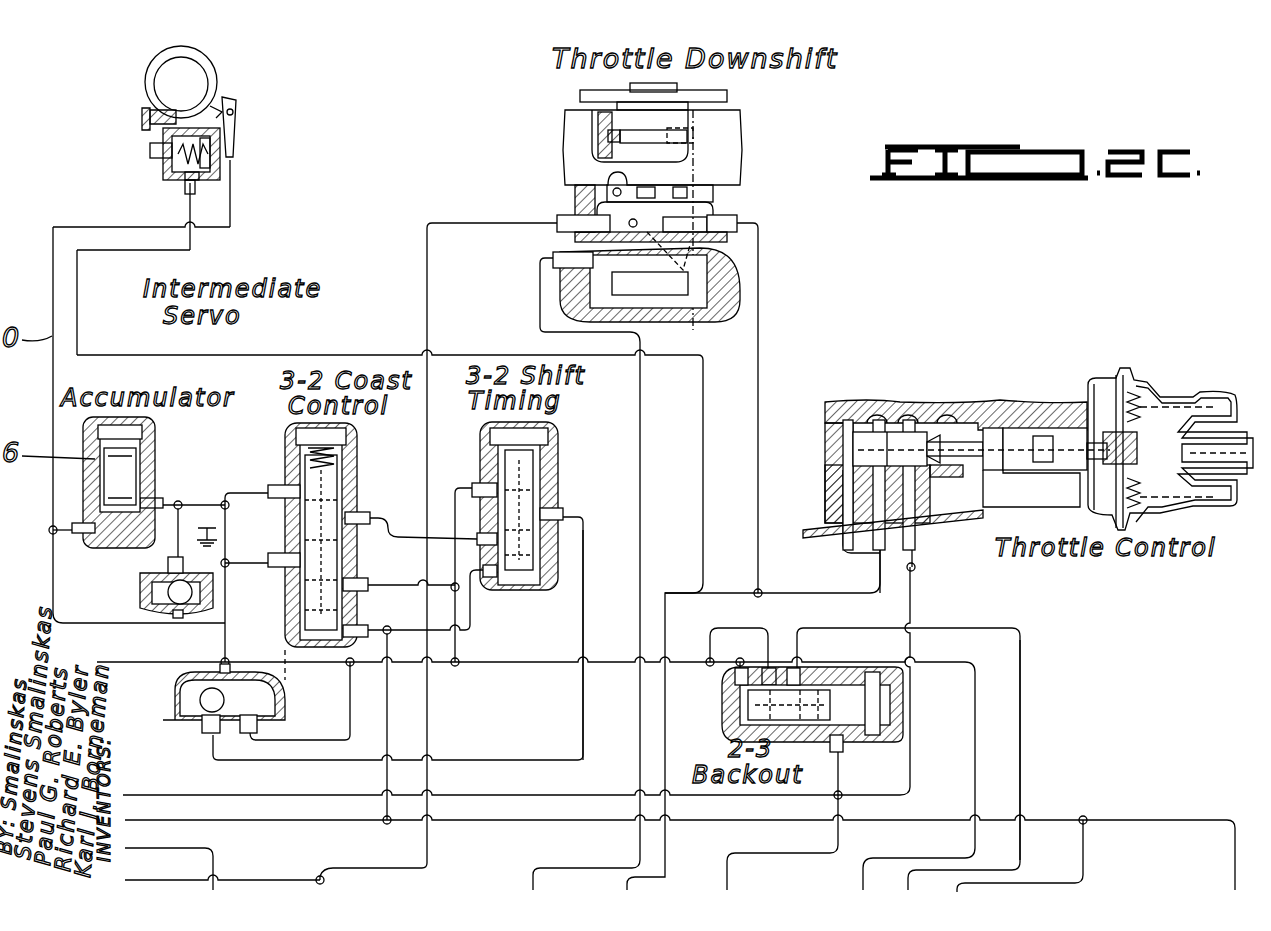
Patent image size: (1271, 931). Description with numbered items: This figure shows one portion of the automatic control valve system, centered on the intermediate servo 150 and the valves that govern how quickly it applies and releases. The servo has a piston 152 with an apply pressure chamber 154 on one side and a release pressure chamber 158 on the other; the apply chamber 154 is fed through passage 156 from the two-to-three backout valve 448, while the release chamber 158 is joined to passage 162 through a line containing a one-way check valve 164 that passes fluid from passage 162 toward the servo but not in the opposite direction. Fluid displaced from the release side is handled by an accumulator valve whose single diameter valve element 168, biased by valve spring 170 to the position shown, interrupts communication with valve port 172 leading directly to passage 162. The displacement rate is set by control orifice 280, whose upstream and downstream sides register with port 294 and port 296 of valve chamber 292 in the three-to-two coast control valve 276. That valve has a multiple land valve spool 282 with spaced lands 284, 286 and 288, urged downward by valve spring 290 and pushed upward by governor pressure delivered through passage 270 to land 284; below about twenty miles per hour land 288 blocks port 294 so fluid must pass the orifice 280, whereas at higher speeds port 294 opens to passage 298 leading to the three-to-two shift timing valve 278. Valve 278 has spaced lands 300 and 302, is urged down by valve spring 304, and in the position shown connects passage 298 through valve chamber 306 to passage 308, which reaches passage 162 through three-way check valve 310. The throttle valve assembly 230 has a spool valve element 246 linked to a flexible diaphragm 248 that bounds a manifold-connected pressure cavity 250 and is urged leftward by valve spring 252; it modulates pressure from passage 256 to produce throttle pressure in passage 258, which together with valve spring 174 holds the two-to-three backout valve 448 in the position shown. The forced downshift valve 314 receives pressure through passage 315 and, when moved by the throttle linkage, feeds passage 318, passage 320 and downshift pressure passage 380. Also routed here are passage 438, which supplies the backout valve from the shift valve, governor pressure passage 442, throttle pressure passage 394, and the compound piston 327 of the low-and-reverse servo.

The intermediate servo 150 is at (302, 42).
The piston 152 is at (150, 149).
The apply pressure chamber 154 is at (170, 176).
The release pressure chamber 158 is at (225, 164).
The passage 156 is at (312, 345).
The forced downshift valve 314 is at (706, 165).
The passage 315 is at (760, 290).
The passage 318 is at (508, 207).
The passage 320 is at (540, 290).
The valve spring 170 is at (160, 450).
The single diameter valve element 168 is at (148, 471).
The valve port 172 is at (150, 501).
The one-way check valve 164 is at (166, 590).
The passage 162 is at (123, 662).
The control orifice 280 is at (213, 525).
The port 294 is at (276, 490).
The valve spring 290 is at (328, 541).
The valve land 288 is at (345, 471).
The 3-2 coast control valve 276 is at (350, 501).
The passage 298 is at (395, 535).
The valve chamber 292 is at (300, 521).
The valve land 286 is at (292, 569).
The port 296 is at (300, 586).
The valve land 284 is at (320, 611).
The multiple land valve spool 282 is at (362, 586).
The valve spring 304 is at (555, 525).
The 3-2 shift timing valve 278 is at (527, 492).
The valve land 302 is at (550, 503).
The passage 308 is at (586, 560).
The valve chamber 306 is at (486, 594).
The valve land 300 is at (530, 596).
The spool valve element 246 is at (956, 450).
The throttle valve assembly 230 is at (916, 445).
The flexible diaphragm 248 is at (1125, 400).
The pressure cavity 250 is at (1170, 421).
The valve spring 252 is at (1200, 396).
The passage 256 is at (775, 596).
The passage 258 is at (215, 795).
The 2-3 backout valve 448 is at (773, 688).
The valve spring 174 is at (835, 693).
The compound piston 327 is at (990, 629).
The passage 438 is at (1022, 737).
The passage 442 is at (1085, 861).
The three-way check valve 310 is at (190, 726).
The throttle pressure passage 394 is at (220, 852).
The governor pressure passage 270 is at (232, 829).
The downshift pressure passage 380 is at (143, 878).